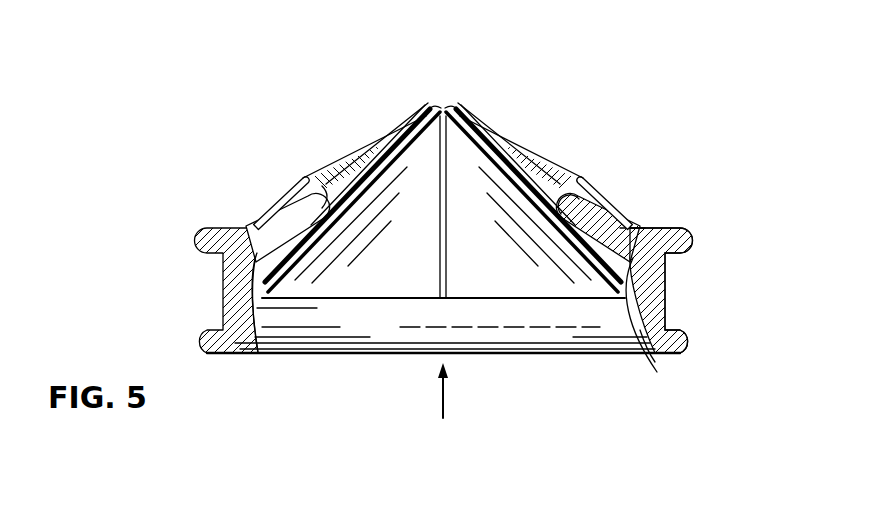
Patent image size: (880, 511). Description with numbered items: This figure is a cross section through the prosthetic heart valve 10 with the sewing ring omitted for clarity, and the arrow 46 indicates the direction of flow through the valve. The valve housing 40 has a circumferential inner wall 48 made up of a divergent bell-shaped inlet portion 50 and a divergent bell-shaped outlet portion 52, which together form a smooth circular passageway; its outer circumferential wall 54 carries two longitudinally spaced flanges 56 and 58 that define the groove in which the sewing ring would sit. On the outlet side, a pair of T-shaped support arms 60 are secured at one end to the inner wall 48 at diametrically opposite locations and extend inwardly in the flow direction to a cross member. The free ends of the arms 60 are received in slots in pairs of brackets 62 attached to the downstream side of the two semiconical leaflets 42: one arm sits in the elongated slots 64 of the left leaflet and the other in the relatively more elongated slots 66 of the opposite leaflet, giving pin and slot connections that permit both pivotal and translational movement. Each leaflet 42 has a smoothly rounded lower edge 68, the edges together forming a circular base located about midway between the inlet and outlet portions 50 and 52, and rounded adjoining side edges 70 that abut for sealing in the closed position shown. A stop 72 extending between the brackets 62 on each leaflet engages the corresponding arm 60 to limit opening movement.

The prosthetic heart valve 10 is at (614, 143).
The valve housing 40 is at (688, 221).
The leaflets 42 is at (416, 128).
The arrow 46 is at (448, 393).
The circumferential inner wall 48 is at (272, 325).
The divergent bell-shaped inlet portion 50 is at (643, 350).
The divergent bell-shaped outlet portion 52 is at (657, 228).
The outer circumferential wall 54 is at (667, 293).
The flange 56 is at (692, 340).
The flange 58 is at (692, 235).
The T-shaped support arms 60 is at (265, 225).
The brackets 62 is at (360, 162).
The elongated slots 64 is at (325, 190).
The elongated slots 66 is at (567, 197).
The lower edge 68 is at (257, 292).
The side edges 70 is at (444, 273).
The stop 72 is at (303, 190).